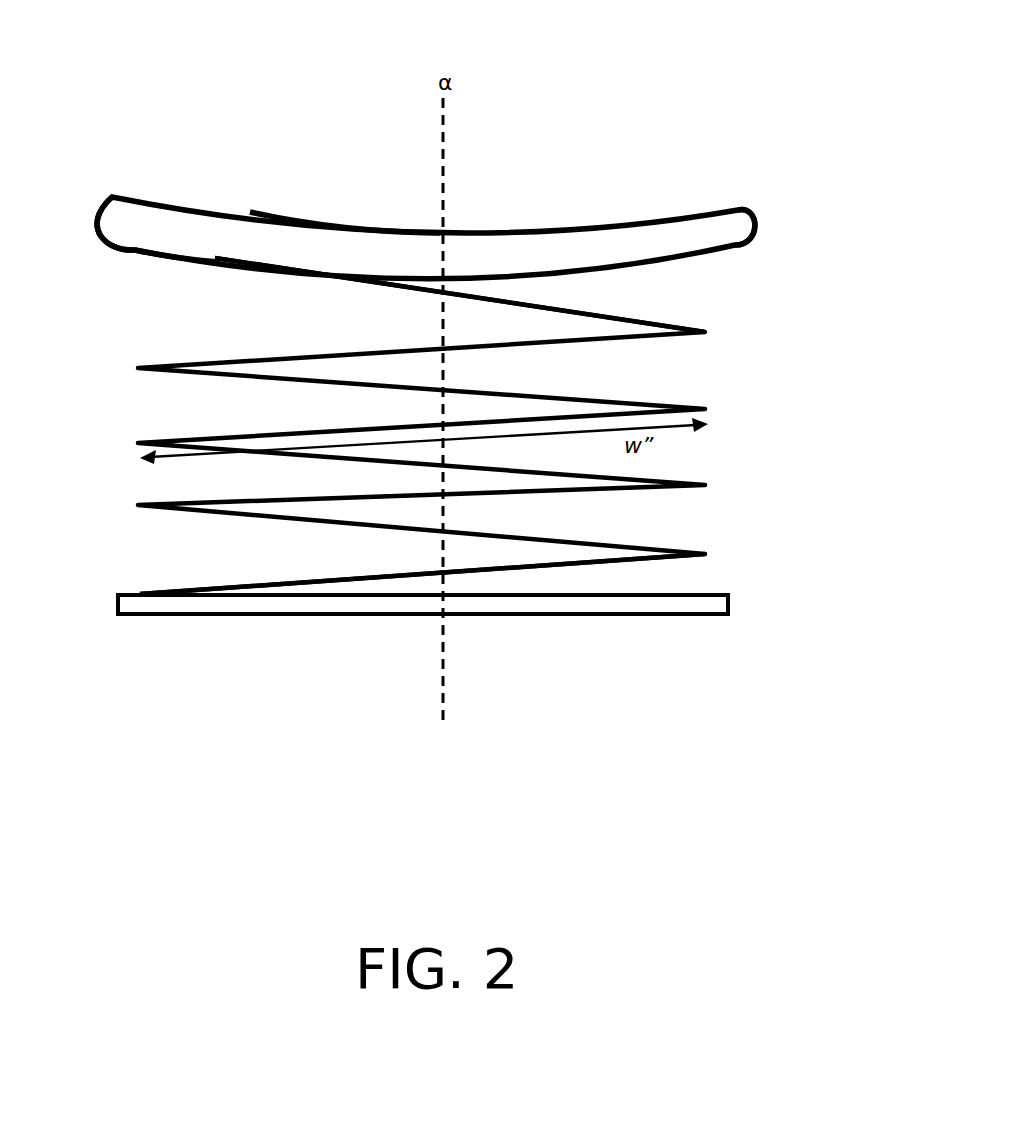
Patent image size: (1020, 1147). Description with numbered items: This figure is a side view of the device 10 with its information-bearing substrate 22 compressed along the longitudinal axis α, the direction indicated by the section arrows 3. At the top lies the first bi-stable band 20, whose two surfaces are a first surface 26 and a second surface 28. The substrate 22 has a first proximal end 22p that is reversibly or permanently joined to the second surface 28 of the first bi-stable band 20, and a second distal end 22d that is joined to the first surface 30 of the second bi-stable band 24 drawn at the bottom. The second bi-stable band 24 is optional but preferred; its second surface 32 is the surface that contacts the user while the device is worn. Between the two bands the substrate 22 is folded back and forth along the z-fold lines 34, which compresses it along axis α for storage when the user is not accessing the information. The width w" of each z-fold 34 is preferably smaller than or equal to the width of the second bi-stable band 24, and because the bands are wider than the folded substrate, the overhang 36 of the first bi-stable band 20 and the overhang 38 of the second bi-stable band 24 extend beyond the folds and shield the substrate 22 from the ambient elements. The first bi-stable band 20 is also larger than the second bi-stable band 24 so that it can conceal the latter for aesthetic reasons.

The section line 3- 3 is at (118, 688).
The device 10 is at (630, 138).
The first bi-stable band 20 is at (487, 262).
The substrate 22 is at (244, 362).
The first proximal end 22p is at (496, 295).
The second distal end 22d is at (140, 594).
The second bi-stable band 24 is at (346, 607).
The first surface 26 is at (280, 218).
The second surface 28 is at (135, 252).
The first surface 30 is at (600, 595).
The second surface 32 is at (580, 615).
The z-fold lines 34 is at (705, 485).
The overhang 36 is at (114, 222).
The overhang 38 is at (131, 607).